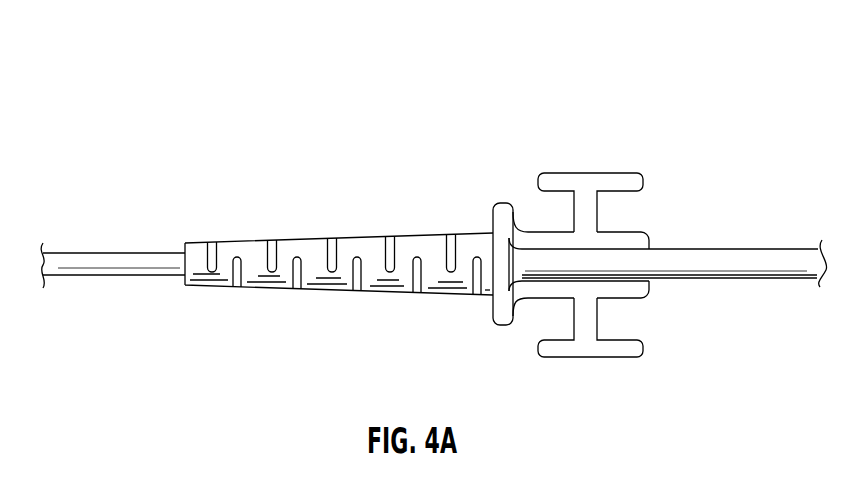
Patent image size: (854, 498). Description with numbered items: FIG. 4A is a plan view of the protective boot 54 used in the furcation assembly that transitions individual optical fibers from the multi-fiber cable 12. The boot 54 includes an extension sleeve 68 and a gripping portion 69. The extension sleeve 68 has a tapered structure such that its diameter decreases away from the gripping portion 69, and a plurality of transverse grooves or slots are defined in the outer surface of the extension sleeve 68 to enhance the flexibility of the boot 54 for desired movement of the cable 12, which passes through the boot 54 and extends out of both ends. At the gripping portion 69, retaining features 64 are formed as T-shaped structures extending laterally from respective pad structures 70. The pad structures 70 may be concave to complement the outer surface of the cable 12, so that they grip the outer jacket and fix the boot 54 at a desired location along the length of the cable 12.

The multi-fiber cable 12 is at (131, 261).
The protective boot 54 is at (372, 90).
The retaining features 64 is at (592, 181).
The extension sleeve 68 is at (287, 272).
The gripping portion 69 is at (598, 369).
The pad structures 70 is at (632, 238).